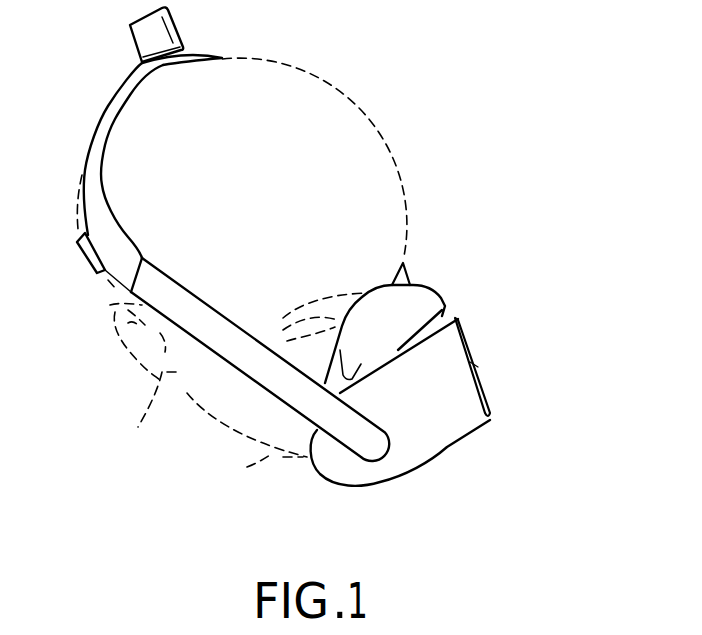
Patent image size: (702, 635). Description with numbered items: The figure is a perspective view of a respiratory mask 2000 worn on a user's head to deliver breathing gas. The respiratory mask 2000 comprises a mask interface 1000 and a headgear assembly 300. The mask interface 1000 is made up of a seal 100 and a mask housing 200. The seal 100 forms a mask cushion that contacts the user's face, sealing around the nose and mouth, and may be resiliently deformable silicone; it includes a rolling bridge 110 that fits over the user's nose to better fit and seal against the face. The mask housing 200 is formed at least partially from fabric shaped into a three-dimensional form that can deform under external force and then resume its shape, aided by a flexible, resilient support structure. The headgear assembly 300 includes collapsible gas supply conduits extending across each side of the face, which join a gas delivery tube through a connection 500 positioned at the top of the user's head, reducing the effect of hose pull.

The seal 100 is at (449, 317).
The rolling bridge 110 is at (411, 309).
The mask housing 200 is at (453, 409).
The headgear assembly 300 is at (175, 302).
The connection 500 is at (160, 33).
The mask interface 1000 is at (418, 432).
The respiratory mask 2000 is at (456, 364).